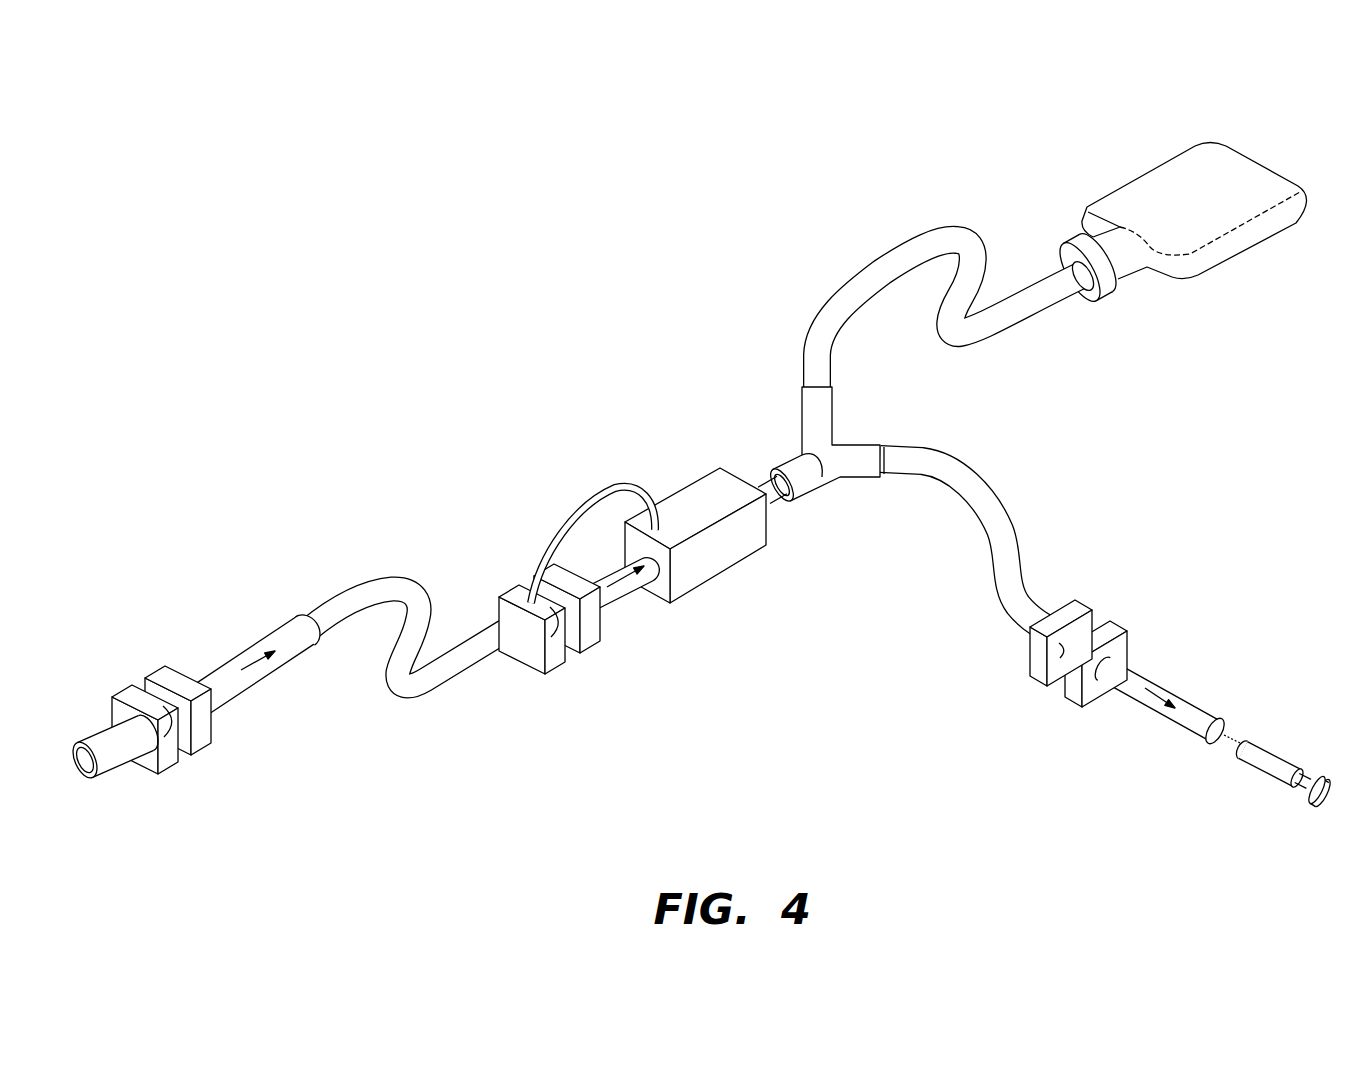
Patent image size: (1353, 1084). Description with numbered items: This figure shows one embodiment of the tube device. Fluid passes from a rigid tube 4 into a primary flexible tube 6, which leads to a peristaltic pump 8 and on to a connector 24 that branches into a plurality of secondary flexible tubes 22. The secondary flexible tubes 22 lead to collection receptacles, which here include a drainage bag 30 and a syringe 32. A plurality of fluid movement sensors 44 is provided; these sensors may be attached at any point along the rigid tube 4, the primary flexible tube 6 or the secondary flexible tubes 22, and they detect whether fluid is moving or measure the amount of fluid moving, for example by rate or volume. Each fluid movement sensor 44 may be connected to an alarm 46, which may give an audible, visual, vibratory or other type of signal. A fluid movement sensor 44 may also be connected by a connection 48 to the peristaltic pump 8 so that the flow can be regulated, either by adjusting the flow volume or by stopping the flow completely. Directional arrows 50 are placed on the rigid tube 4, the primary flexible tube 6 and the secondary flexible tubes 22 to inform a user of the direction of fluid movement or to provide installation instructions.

The rigid tube 4 is at (298, 660).
The primary flexible tube 6 is at (450, 684).
The peristaltic pump 8 is at (716, 572).
The secondary flexible tubes 22 is at (950, 227).
The connector 24 is at (790, 461).
The drainage bag 30 is at (1208, 148).
The syringe 32 is at (1272, 757).
The fluid movement sensor 44 is at (166, 768).
The alarm 46 is at (199, 750).
The connection 48 is at (611, 486).
The directional arrows 50 is at (253, 662).